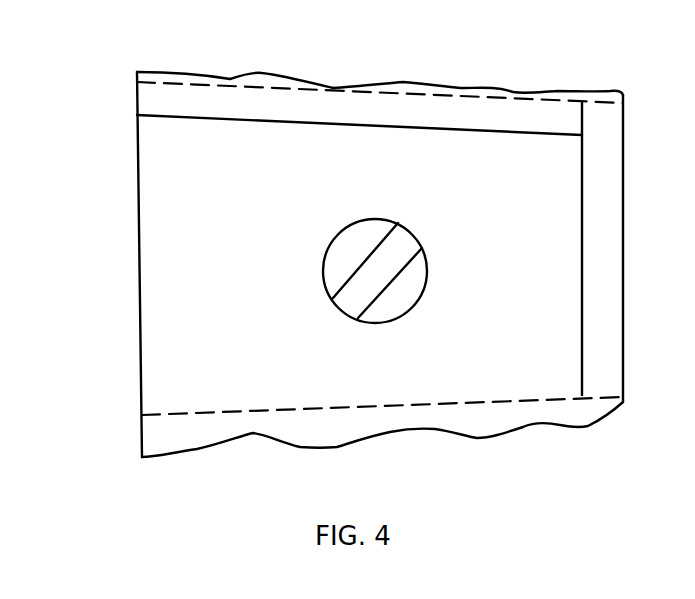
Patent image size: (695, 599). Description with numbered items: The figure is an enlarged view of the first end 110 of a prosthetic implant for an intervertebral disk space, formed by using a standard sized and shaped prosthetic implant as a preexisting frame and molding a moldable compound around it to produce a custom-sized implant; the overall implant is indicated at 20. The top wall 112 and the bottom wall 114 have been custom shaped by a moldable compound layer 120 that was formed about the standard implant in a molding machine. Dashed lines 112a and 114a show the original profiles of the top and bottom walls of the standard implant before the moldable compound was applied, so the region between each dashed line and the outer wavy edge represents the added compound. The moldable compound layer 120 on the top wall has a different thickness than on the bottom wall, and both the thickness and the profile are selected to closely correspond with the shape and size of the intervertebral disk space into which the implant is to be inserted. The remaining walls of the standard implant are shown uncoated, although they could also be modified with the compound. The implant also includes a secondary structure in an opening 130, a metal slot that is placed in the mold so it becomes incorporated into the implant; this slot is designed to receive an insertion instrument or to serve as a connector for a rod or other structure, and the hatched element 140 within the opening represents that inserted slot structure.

The golf club head assembly 20 is at (106, 99).
The first end 110 is at (155, 207).
The top wall 112 is at (473, 84).
The dashed line 112a is at (518, 100).
The bottom wall 114 is at (530, 424).
The dashed line 114a is at (413, 404).
The moldable compound layer 120 is at (432, 85).
The opening 130 is at (355, 233).
The plug 140 is at (402, 235).